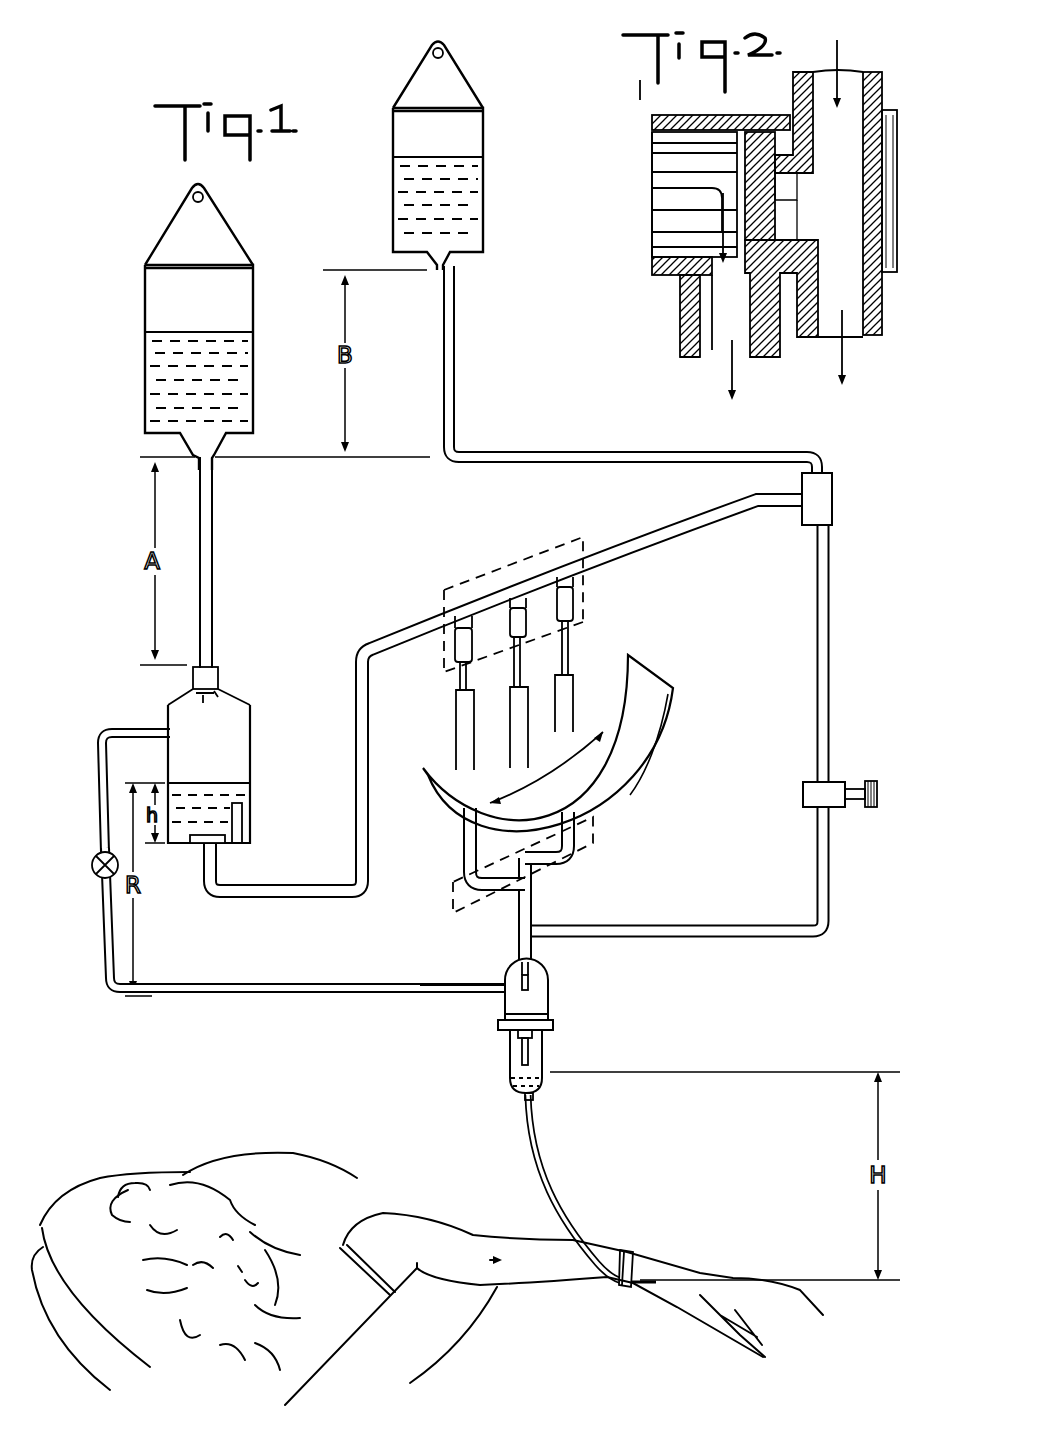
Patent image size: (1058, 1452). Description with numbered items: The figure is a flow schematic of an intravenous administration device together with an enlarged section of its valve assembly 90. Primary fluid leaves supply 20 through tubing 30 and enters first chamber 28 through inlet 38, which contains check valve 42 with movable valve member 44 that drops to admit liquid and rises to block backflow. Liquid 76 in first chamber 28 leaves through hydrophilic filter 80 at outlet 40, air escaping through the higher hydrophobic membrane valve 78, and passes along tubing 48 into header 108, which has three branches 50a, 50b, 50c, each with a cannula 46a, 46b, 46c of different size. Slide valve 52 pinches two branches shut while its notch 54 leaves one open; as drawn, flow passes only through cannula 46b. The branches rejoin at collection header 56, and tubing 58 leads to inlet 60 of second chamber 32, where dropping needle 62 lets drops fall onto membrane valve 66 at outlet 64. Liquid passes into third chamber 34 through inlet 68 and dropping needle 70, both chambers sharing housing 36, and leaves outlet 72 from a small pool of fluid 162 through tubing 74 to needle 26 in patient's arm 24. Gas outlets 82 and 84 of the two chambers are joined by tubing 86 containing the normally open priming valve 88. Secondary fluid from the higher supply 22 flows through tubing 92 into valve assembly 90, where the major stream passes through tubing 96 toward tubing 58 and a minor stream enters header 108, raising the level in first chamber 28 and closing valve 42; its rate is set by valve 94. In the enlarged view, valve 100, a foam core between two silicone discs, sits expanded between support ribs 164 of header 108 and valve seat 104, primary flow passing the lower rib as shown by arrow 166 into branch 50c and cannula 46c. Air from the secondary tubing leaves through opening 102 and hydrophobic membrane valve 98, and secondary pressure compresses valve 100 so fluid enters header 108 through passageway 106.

In FIG. 1, the primary fluid supply 20 is at (150, 394).
In FIG. 1, the secondary fluid supply 22 is at (395, 210).
In FIG. 1, the patient's arm 24 is at (620, 1250).
In FIG. 1, the needle 26 is at (645, 1285).
In FIG. 1, the first chamber 28 is at (252, 752).
In FIG. 1, the tubing 30 is at (214, 555).
In FIG. 1, the second chamber 32 is at (540, 1002).
In FIG. 1, the third chamber 34 is at (543, 1055).
In FIG. 1, the housing 36 is at (553, 1035).
In FIG. 1, the inlet 38 is at (218, 682).
In FIG. 1, the outlet 40 is at (218, 855).
In FIG. 1, the check valve 42 is at (232, 700).
In FIG. 1, the movable valve member 44 is at (206, 698).
In FIG. 1, the cannula 46a is at (455, 686).
In FIG. 1, the cannula 46b is at (512, 690).
In FIG. 1, the cannula 46c is at (572, 645).
In FIG. 1, the tubing 48 is at (355, 793).
In FIG. 1, the branch 50a is at (452, 645).
In FIG. 1, the branch 50b is at (528, 612).
In FIG. 1, the branch 50c is at (575, 589).
In FIG. 2, the branch 50c is at (705, 352).
In FIG. 1, the slide valve 52 is at (650, 718).
In FIG. 1, the notch 54 is at (535, 768).
In FIG. 1, the collection header 56 is at (598, 840).
In FIG. 1, the tubing 58 is at (533, 897).
In FIG. 1, the inlet 60 is at (530, 967).
In FIG. 1, the dropping needle 62 is at (530, 985).
In FIG. 1, the outlet 64 is at (520, 1020).
In FIG. 1, the membrane valve 66 is at (498, 1025).
In FIG. 1, the inlet 68 is at (518, 1040).
In FIG. 1, the dropping needle 70 is at (520, 1058).
In FIG. 1, the outlet 72 is at (535, 1095).
In FIG. 1, the tubing 74 is at (533, 1178).
In FIG. 1, the liquid 76 is at (205, 781).
In FIG. 1, the hydrophobic membrane valve 78 is at (243, 815).
In FIG. 1, the hydrophilic filter 80 is at (195, 845).
In FIG. 1, the outlet 82 is at (166, 728).
In FIG. 1, the outlet 84 is at (505, 975).
In FIG. 1, the tubing 86 is at (102, 915).
In FIG. 1, the priming valve 88 is at (95, 856).
In FIG. 1, the valve assembly 90 is at (833, 500).
In FIG. 2, the valve assembly 90 is at (638, 255).
In FIG. 1, the tubing 92 is at (620, 448).
In FIG. 2, the tubing 92 is at (880, 84).
In FIG. 1, the valve 94 is at (845, 785).
In FIG. 1, the tubing 96 is at (768, 925).
In FIG. 2, the tubing 96 is at (882, 325).
In FIG. 2, the hydrophobic membrane valve 98 is at (898, 175).
In FIG. 2, the valve 100 is at (752, 130).
In FIG. 2, the opening 102 is at (808, 195).
In FIG. 2, the valve seat 104 is at (786, 178).
In FIG. 2, the passageway 106 is at (790, 235).
In FIG. 1, the header 108 is at (500, 572).
In FIG. 2, the header 108 is at (668, 115).
In FIG. 1, the pool of fluid 162 is at (510, 1080).
In FIG. 2, the support ribs 164 is at (652, 224).
In FIG. 2, the arrow 166 is at (660, 190).